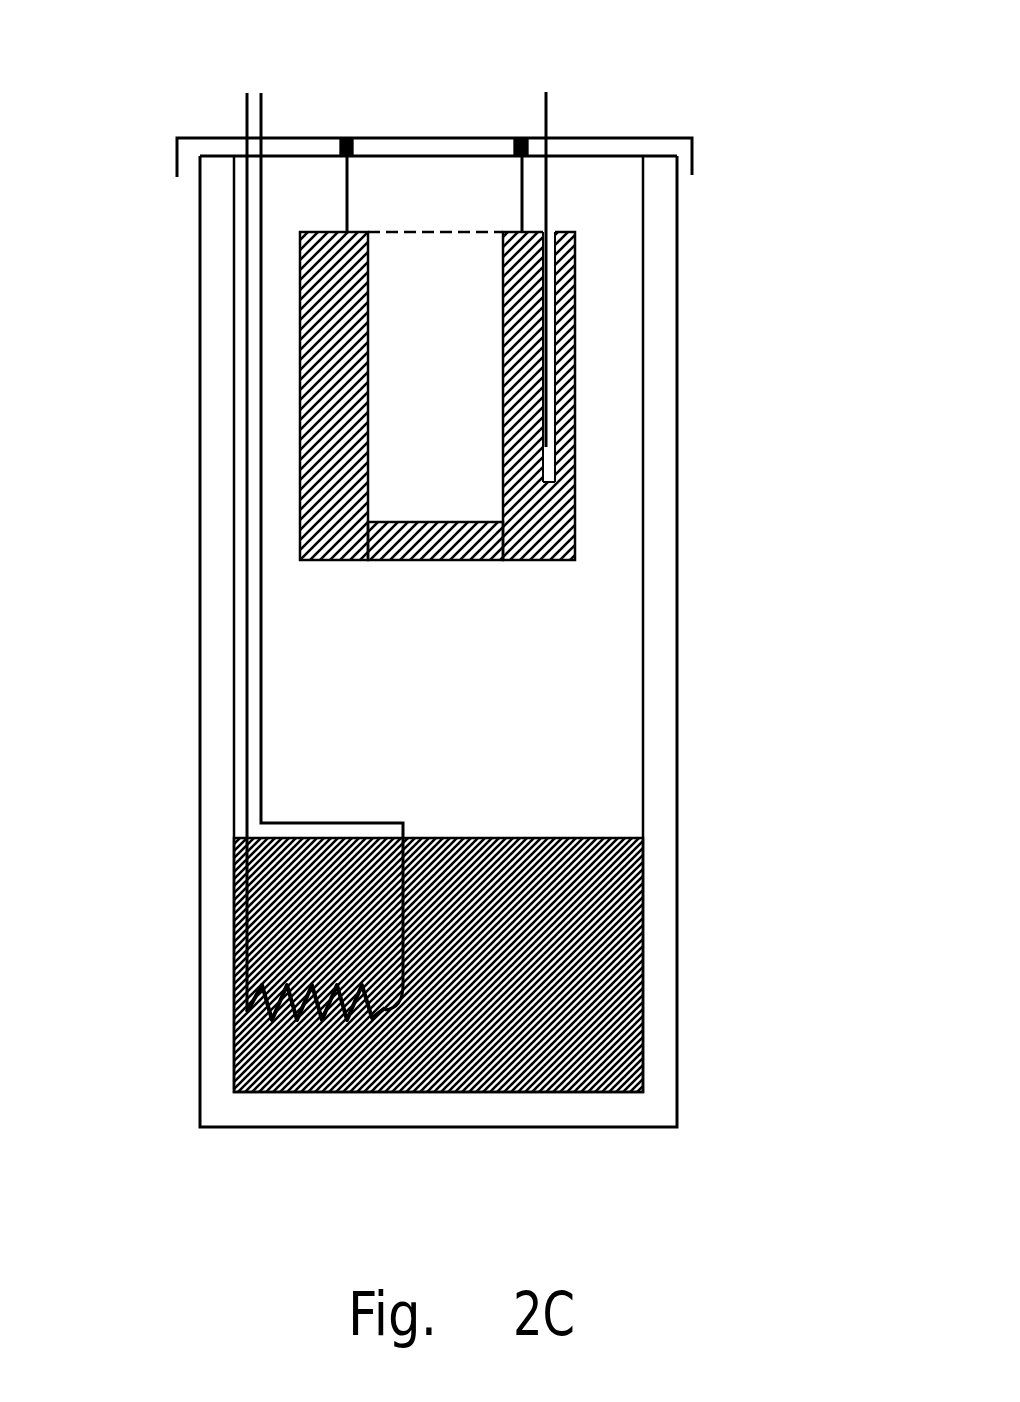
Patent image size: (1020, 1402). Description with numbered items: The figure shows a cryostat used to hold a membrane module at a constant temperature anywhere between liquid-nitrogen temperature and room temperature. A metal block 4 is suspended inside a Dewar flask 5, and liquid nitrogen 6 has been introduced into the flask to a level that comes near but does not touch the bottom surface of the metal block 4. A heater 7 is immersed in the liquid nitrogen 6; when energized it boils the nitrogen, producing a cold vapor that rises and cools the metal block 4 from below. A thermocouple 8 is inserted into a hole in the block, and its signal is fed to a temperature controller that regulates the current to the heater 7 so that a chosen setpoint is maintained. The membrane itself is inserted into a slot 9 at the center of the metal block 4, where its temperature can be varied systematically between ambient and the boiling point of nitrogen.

The metal block 4 is at (291, 463).
The Dewar flask 5 is at (170, 671).
The liquid nitrogen 6 is at (603, 821).
The heater 7 is at (235, 1015).
The thermocouple 8 is at (579, 204).
The slot 9 is at (381, 153).